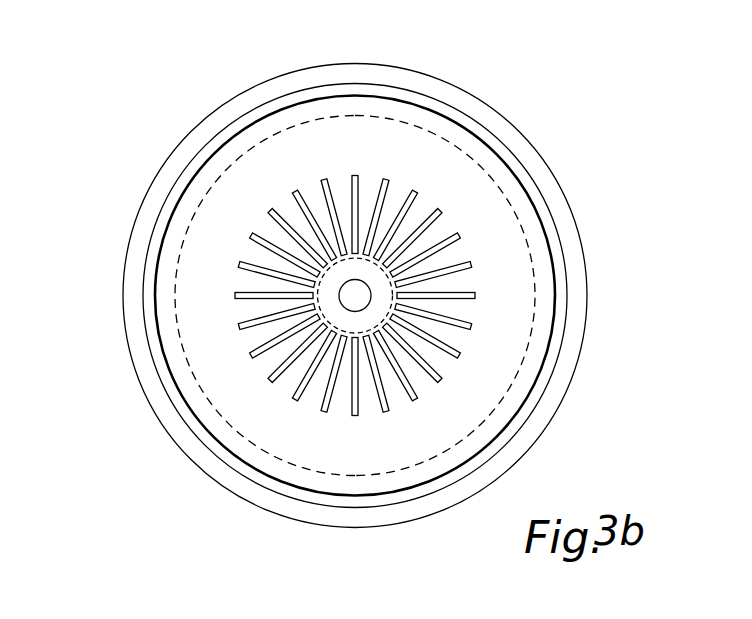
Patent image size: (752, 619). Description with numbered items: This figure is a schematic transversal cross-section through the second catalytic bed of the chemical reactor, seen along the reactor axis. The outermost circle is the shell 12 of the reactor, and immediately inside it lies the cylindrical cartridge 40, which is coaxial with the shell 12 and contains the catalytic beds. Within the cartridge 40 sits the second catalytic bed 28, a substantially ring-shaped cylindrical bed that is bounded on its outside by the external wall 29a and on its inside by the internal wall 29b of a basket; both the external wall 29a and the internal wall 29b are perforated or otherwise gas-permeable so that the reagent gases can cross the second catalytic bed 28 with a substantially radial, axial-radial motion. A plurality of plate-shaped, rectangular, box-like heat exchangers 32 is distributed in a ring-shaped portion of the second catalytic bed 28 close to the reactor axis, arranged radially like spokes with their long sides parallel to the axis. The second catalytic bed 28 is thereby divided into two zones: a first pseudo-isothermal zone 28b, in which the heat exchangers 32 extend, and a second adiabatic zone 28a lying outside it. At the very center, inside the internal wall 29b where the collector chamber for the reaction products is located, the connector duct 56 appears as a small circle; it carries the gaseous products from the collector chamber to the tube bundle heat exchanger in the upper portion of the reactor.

The shell 12 is at (443, 93).
The cartridge 40 is at (370, 94).
The second catalytic bed 28 is at (498, 193).
The second adiabatic zone 28a is at (477, 245).
The first pseudo-isothermal zone 28b is at (420, 305).
The external wall 29a is at (185, 363).
The internal wall 29b is at (292, 356).
The heat exchangers 32 is at (262, 250).
The connector duct 56 is at (352, 280).